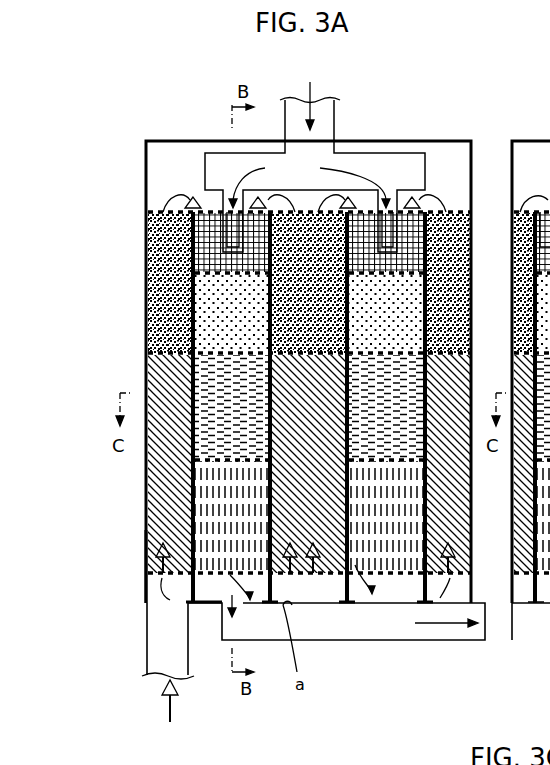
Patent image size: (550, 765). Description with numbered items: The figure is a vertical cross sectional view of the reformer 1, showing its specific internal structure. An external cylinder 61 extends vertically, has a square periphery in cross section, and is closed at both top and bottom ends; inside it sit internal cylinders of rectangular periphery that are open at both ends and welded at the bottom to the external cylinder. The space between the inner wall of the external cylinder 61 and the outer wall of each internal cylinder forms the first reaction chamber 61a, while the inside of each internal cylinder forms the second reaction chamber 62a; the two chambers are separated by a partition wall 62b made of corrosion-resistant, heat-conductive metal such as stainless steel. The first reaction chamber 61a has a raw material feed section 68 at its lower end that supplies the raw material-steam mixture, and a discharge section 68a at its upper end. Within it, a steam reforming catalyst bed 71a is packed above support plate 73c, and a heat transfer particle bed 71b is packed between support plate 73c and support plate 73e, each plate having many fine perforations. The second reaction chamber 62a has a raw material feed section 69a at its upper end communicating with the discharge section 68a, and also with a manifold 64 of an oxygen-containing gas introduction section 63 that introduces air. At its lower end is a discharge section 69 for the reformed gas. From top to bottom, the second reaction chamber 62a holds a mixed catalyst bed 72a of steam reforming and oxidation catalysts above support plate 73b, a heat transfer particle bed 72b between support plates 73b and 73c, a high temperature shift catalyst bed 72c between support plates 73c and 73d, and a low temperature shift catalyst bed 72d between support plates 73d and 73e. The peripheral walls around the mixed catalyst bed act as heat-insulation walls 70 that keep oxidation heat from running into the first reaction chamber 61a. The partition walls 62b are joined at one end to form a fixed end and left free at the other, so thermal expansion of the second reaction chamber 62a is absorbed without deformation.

In FIG. 3A, the reformer 1 is at (181, 96).
In FIG. 3C, the reformer 1 is at (549, 65).
In FIG. 3A, the external cylinder 61 is at (428, 140).
In FIG. 3C, the external cylinder 61 is at (546, 135).
In FIG. 3A, the first reaction chamber 61a is at (147, 605).
In FIG. 3A, the second reaction chamber 62a is at (215, 580).
In FIG. 3A, the partition wall 62b is at (345, 465).
In FIG. 3A, the oxygen-containing gas introduction section 63 is at (335, 118).
In FIG. 3A, the manifold 64 is at (357, 152).
In FIG. 3A, the raw material feed section 68 is at (147, 668).
In FIG. 3A, the discharge section 68a is at (162, 180).
In FIG. 3A, the discharge section 69 is at (450, 643).
In FIG. 3A, the raw material feed section 69a is at (233, 211).
In FIG. 3A, the heat-insulation wall 70 is at (162, 236).
In FIG. 3A, the steam reforming catalyst bed 71a is at (191, 263).
In FIG. 3A, the heat transfer particle bed 71b is at (147, 531).
In FIG. 3A, the mixed catalyst bed 72a is at (200, 214).
In FIG. 3A, the heat transfer particle bed 72b is at (215, 322).
In FIG. 3A, the high temperature shift catalyst bed 72c is at (215, 378).
In FIG. 3A, the low temperature shift catalyst bed 72d is at (215, 522).
In FIG. 3A, the support plate 73b is at (215, 275).
In FIG. 3A, the support plate 73c is at (172, 356).
In FIG. 3A, the support plate 73d is at (215, 460).
In FIG. 3A, the support plate 73e is at (195, 577).